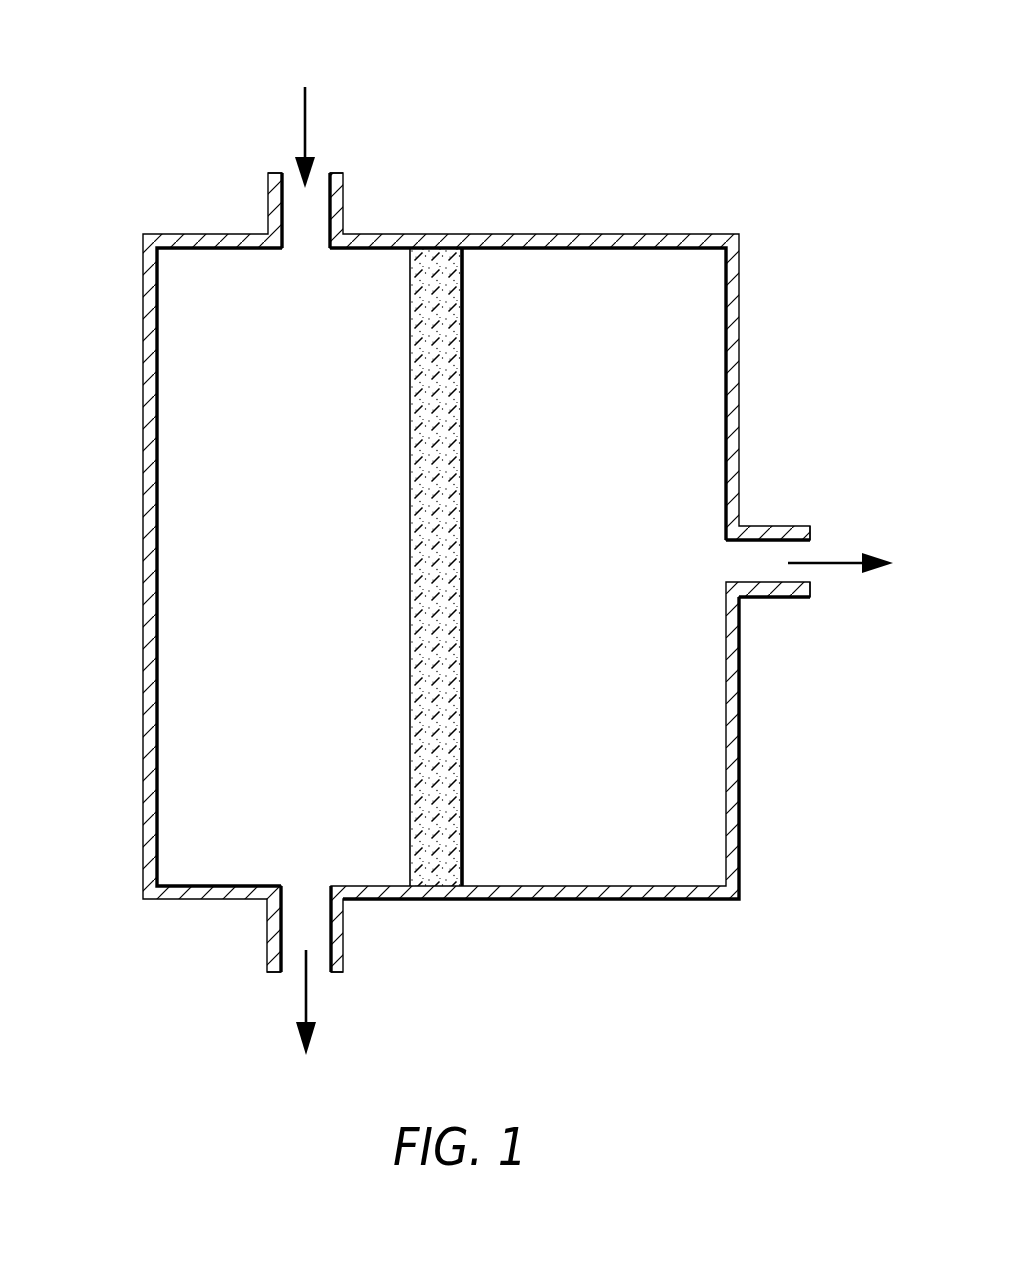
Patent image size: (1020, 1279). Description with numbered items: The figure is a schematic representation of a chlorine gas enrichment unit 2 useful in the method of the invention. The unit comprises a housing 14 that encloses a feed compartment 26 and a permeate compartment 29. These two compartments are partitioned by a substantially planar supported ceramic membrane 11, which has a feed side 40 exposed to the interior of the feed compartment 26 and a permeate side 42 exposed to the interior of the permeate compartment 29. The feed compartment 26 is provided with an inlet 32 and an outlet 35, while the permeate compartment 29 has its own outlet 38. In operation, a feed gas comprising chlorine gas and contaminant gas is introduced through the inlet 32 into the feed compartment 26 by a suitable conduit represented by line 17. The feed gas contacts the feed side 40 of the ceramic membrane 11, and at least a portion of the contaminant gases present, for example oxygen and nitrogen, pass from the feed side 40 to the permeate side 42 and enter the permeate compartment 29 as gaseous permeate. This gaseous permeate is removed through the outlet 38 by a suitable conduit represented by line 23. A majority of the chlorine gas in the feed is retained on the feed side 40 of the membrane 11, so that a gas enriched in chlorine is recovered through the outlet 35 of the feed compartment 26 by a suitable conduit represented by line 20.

The chlorine gas enrichment unit 2 is at (760, 112).
The ceramic membrane 11 is at (458, 792).
The housing 14 is at (143, 605).
The line 17 is at (307, 99).
The line 20 is at (308, 995).
The line 23 is at (842, 565).
The feed compartment 26 is at (285, 585).
The permeate compartment 29 is at (605, 583).
The inlet 32 is at (302, 212).
The outlet 35 is at (295, 921).
The outlet 38 is at (766, 550).
The feed side 40 is at (412, 420).
The permeate side 42 is at (463, 348).